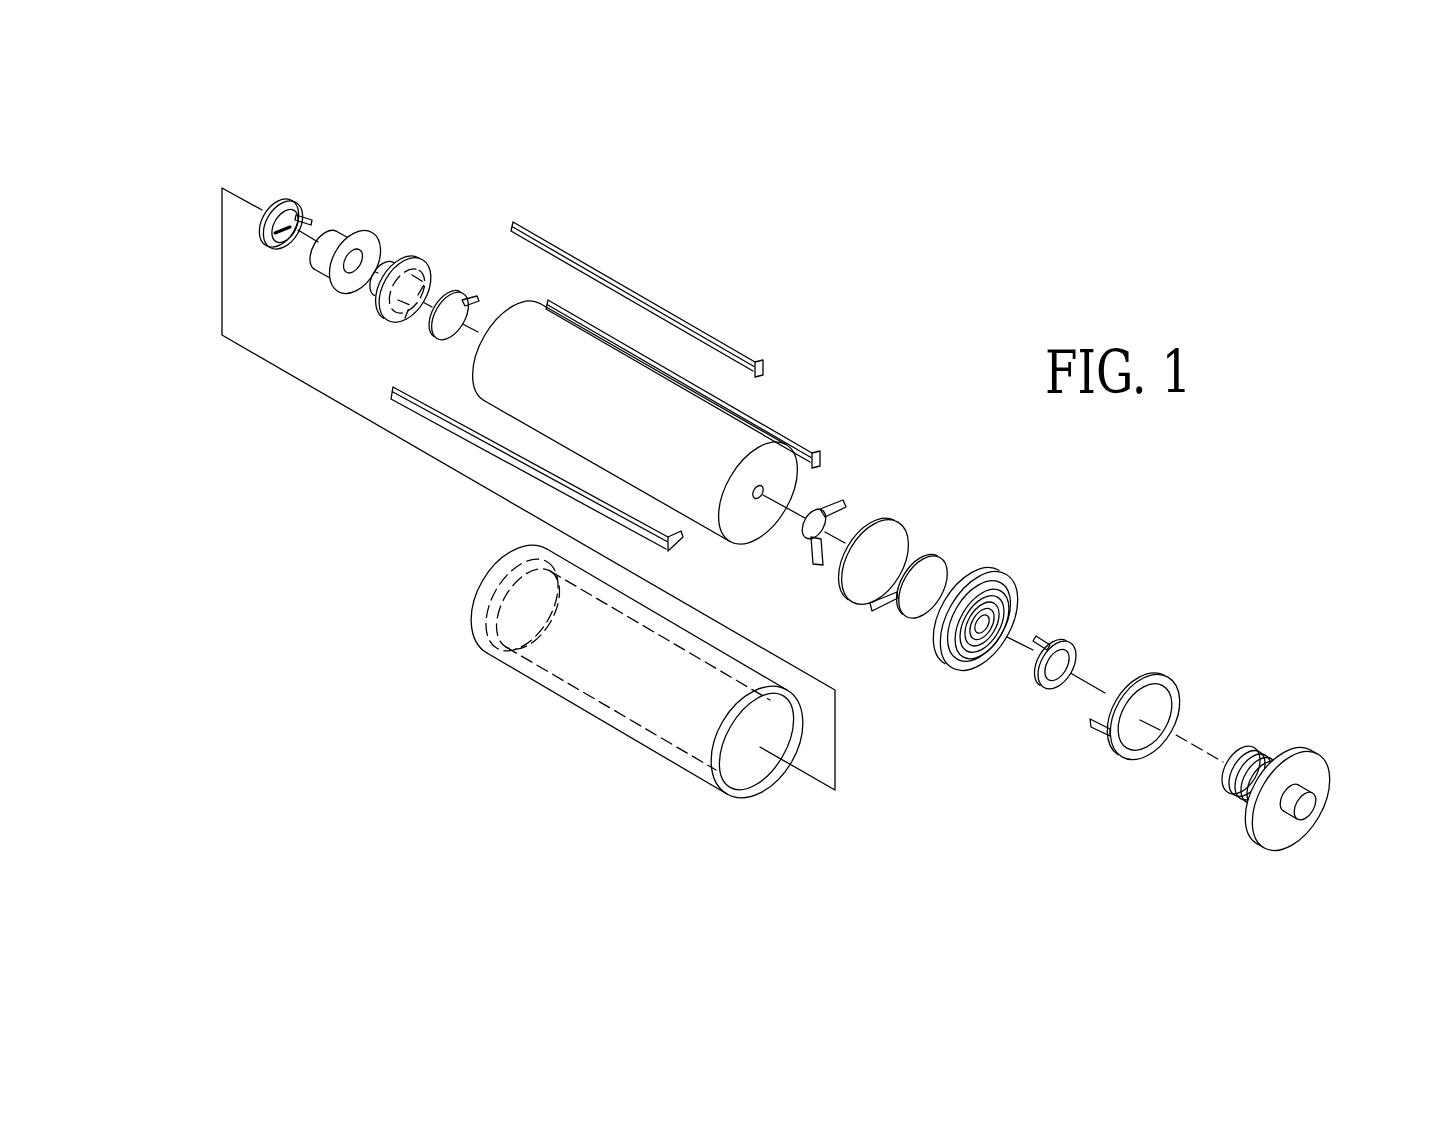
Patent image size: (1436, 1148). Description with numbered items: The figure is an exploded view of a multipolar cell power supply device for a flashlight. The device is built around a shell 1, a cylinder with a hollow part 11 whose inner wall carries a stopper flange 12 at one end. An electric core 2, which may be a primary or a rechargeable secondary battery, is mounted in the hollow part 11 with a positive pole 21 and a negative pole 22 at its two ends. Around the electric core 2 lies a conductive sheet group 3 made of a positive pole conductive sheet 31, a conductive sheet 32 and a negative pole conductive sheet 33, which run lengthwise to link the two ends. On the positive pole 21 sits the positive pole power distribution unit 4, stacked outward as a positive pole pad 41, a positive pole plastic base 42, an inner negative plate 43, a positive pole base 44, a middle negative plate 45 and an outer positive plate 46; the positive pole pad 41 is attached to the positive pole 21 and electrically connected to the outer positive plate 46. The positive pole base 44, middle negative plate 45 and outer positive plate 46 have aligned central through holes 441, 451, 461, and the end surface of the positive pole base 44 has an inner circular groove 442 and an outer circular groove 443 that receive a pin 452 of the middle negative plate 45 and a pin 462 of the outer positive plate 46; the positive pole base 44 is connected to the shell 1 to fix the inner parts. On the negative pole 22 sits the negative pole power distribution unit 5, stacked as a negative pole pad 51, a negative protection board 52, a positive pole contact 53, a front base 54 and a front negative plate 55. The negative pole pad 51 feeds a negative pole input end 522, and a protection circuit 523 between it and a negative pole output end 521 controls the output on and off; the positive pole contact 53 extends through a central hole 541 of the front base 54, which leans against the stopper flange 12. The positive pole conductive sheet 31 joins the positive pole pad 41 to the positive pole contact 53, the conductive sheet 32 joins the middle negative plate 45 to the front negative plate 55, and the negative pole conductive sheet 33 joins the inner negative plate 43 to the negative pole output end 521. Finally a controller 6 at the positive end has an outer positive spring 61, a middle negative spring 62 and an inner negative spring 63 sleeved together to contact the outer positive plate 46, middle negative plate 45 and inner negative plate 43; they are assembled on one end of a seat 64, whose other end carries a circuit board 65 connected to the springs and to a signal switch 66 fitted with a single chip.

The shell 1 is at (640, 690).
The hollow part 11 is at (747, 753).
The stopper flange 12 is at (528, 645).
The electric core 2 is at (690, 427).
The positive pole 21 is at (763, 492).
The negative pole 22 is at (493, 320).
The conductive sheet group 3 is at (616, 393).
The positive pole conductive sheet 31 is at (773, 430).
The conductive sheet 32 is at (677, 313).
The negative pole conductive sheet 33 is at (508, 458).
The positive pole power distribution unit 4 is at (985, 651).
The positive pole pad 41 is at (818, 528).
The positive pole plastic base 42 is at (860, 578).
The inner negative plate 43 is at (927, 577).
The positive pole base 44 is at (985, 641).
The through hole 441 is at (983, 637).
The inner circular groove 442 is at (970, 643).
The outer circular groove 443 is at (958, 650).
The middle negative plate 45 is at (1077, 686).
The through hole 451 is at (1055, 687).
The pin 452 is at (1047, 637).
The outer positive plate 46 is at (1133, 714).
The through hole 461 is at (1140, 727).
The pin 462 is at (1100, 735).
The negative pole power distribution unit 5 is at (431, 246).
The negative pole pad 51 is at (455, 298).
The negative protection board 52 is at (438, 272).
The negative pole output end 521 is at (377, 307).
The negative pole input end 522 is at (433, 273).
The protection circuit 523 is at (408, 327).
The positive pole contact 53 is at (388, 263).
The front base 54 is at (344, 249).
The central hole 541 is at (350, 270).
The front negative plate 55 is at (294, 202).
The controller 6 is at (1270, 762).
The outer positive spring 61 is at (1223, 800).
The middle negative spring 62 is at (1237, 807).
The inner negative spring 63 is at (1248, 743).
The seat 64 is at (1287, 762).
The circuit board 65 is at (1282, 823).
The signal switch 66 is at (1300, 807).